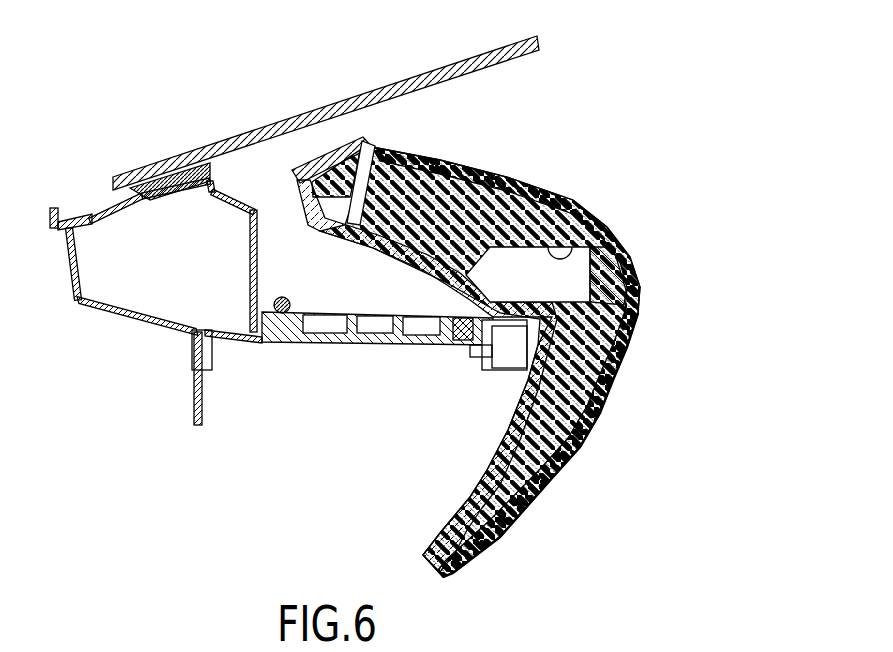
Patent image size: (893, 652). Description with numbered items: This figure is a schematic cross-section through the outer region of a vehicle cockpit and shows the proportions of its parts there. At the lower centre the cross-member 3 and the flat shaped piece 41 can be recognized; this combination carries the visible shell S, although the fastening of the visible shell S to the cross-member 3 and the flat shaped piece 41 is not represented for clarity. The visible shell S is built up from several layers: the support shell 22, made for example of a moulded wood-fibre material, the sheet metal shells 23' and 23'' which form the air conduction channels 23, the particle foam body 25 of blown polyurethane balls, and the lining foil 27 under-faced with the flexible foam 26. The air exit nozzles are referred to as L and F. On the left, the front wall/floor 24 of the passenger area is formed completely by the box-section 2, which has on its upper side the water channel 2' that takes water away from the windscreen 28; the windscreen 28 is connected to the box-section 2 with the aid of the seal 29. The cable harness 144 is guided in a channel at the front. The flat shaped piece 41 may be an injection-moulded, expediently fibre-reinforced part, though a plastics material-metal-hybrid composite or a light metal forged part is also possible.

The box-section 2 is at (164, 277).
The water channel 2' is at (74, 173).
The cross-member 3 is at (512, 360).
The support shell 22 is at (508, 453).
The air conduction channels 23 is at (476, 344).
The sheet metal shell 23' is at (621, 226).
The sheet metal shell 23'' is at (377, 169).
The front wall/floor 24 is at (197, 392).
The particle foam body 25 is at (607, 372).
The flexible foam 26 is at (582, 447).
The lining foil 27 is at (612, 408).
The windscreen 28 is at (490, 50).
The seal 29 is at (175, 185).
The flat shaped piece 41 is at (340, 312).
The cable harness 144 is at (278, 297).
The air exit nozzle F is at (364, 128).
The air exit nozzle L is at (665, 272).
The visible shell S is at (668, 324).